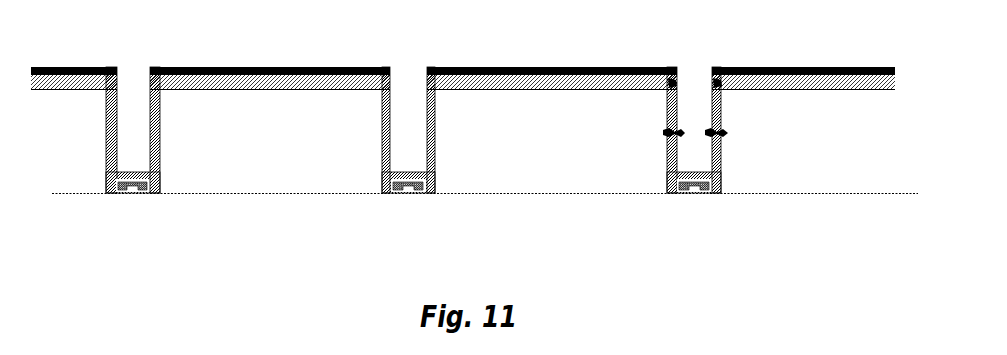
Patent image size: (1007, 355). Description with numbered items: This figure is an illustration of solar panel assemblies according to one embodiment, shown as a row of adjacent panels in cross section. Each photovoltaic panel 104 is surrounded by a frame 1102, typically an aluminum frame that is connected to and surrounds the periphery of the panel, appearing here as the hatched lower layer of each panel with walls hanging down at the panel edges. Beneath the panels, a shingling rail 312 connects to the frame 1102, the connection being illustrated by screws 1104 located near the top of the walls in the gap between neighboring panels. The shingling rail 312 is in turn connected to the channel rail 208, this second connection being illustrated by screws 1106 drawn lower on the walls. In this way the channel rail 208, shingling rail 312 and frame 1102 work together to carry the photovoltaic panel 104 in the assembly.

The photovoltaic panel 104 is at (562, 72).
The channel rail 208 is at (432, 110).
The shingling rail 312 is at (423, 87).
The frame 1102 is at (635, 89).
The screws 1104 is at (680, 88).
The screws 1106 is at (724, 134).